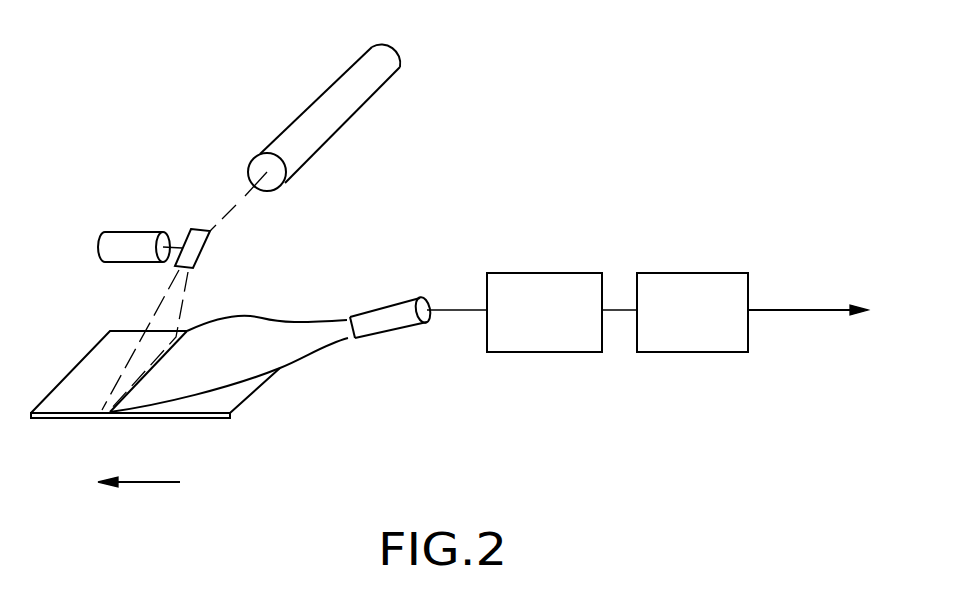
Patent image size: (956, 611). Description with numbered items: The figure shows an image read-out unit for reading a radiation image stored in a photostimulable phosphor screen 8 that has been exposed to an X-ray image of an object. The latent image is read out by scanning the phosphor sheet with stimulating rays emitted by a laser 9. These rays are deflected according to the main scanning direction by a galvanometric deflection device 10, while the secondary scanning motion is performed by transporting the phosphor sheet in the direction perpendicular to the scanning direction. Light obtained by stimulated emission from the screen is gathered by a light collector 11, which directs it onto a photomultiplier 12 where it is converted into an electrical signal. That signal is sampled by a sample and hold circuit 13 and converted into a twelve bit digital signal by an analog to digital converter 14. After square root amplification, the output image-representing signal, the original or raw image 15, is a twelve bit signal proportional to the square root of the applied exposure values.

The photostimulable phosphor screen 8 is at (78, 418).
The laser 9 is at (352, 62).
The galvanometric deflection device 10 is at (193, 228).
The light collector 11 is at (282, 318).
The photomultiplier 12 is at (390, 303).
The sample and hold circuit 13 is at (555, 273).
The analog to digital converter 14 is at (704, 273).
The original or raw image 15 is at (820, 310).